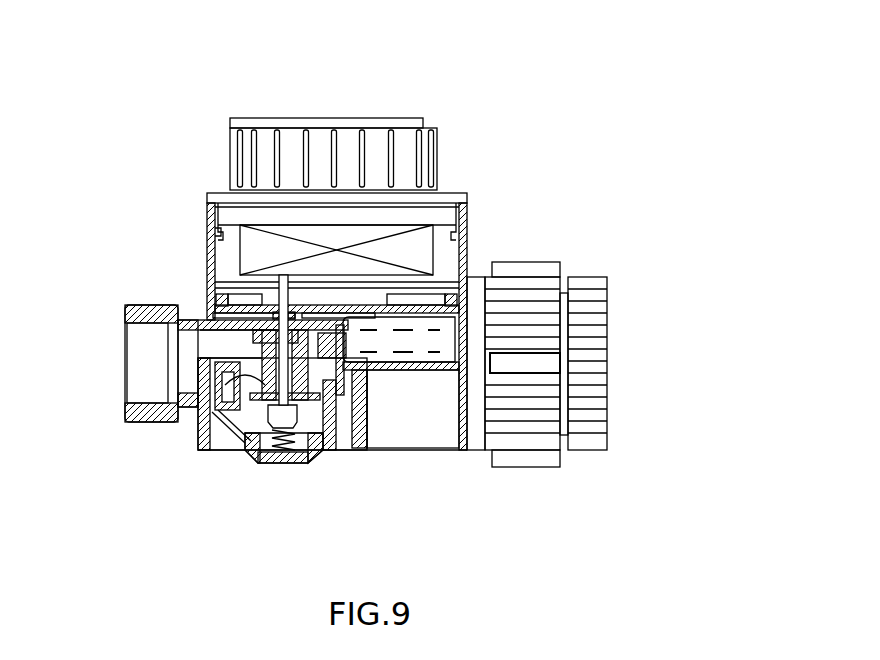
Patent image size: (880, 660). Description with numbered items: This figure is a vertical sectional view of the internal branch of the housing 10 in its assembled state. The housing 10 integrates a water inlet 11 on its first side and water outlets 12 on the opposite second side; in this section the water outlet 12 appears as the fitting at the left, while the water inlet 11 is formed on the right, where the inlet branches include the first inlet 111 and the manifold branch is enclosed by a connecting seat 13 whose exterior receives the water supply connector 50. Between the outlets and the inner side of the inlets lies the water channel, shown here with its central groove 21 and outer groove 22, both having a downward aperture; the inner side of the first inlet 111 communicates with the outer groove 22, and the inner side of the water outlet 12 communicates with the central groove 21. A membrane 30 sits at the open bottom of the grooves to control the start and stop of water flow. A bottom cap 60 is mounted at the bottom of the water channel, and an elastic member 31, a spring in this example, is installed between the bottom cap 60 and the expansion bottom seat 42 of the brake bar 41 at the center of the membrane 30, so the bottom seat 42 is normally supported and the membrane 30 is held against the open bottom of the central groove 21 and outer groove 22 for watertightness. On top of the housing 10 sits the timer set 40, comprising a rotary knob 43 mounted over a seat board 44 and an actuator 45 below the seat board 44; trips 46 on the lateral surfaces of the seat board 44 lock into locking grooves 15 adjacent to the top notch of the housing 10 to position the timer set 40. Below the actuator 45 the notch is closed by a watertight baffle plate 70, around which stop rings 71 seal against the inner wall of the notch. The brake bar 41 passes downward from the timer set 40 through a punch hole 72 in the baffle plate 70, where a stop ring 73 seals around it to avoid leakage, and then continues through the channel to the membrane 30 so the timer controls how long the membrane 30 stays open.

The housing 10 is at (207, 253).
The water inlet 11 is at (623, 280).
The water outlet 12 is at (140, 357).
The connecting seat 13 is at (478, 437).
The locking groove 15 is at (207, 222).
The trip 46 is at (337, 221).
The central groove 21 is at (308, 443).
The outer groove 22 is at (320, 440).
The membrane 30 is at (207, 372).
The elastic member 31 is at (273, 463).
The timer set 40 is at (452, 172).
The brake bar 41 is at (240, 447).
The expansion bottom seat 42 is at (257, 447).
The rotary knob 43 is at (290, 133).
The seat board 44 is at (220, 195).
The actuator 45 is at (282, 238).
The water supply connector 50 is at (523, 290).
The bottom cap 60 is at (229, 441).
The watertight baffle plate 70 is at (213, 277).
The stop ring 71 is at (218, 302).
The punch hole 72 is at (302, 305).
The stop ring 73 is at (287, 305).
The first inlet 111 is at (412, 330).